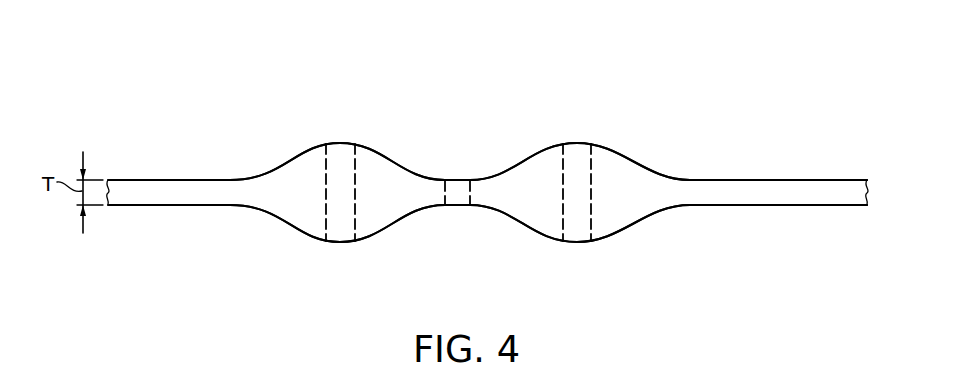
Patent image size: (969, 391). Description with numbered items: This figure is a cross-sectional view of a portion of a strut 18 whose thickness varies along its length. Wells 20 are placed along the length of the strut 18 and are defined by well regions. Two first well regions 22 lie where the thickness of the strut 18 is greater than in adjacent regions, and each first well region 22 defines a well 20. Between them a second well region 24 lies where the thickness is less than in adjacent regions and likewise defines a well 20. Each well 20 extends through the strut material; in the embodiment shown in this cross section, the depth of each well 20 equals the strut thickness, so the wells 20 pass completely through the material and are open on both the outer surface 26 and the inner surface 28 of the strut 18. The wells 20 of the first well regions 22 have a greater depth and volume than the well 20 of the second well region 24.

The strut 18 is at (232, 85).
The well 20 is at (346, 147).
The first well region 22 is at (312, 147).
The second well region 24 is at (440, 178).
The outer surface 26 is at (761, 178).
The inner surface 28 is at (798, 207).